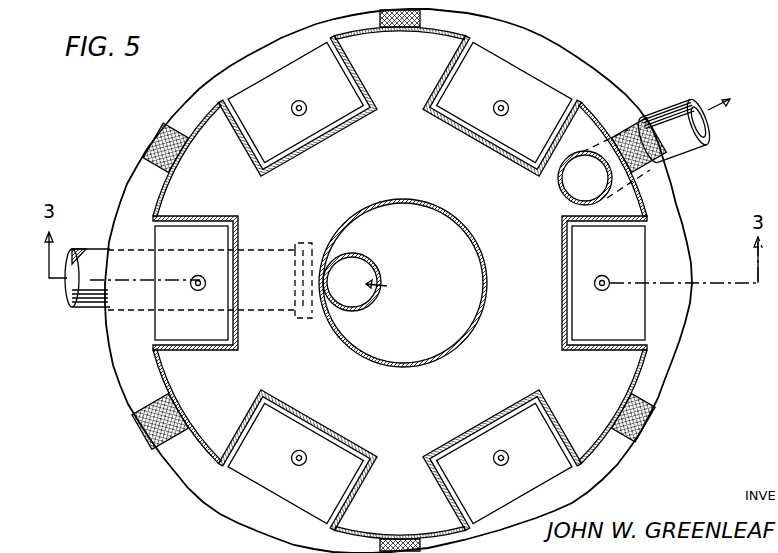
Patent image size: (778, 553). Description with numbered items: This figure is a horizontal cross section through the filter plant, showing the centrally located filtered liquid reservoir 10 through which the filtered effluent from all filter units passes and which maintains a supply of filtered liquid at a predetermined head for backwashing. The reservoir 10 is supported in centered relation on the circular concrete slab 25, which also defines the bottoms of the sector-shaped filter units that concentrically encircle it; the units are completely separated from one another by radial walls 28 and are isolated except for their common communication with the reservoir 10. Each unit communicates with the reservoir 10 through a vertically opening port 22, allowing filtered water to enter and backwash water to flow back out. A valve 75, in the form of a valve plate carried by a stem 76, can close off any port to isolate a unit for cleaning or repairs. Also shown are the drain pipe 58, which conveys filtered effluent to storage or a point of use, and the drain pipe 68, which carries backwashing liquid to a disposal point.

The filtered liquid reservoir 10 is at (431, 172).
The vertically opening port 22 is at (472, 62).
The circular concrete slab 25 is at (670, 209).
The radial wall 28 is at (140, 422).
The drain pipe 58 is at (690, 107).
The drain pipe 68 is at (378, 270).
The valve 75 is at (512, 56).
The valve stem 76 is at (316, 104).